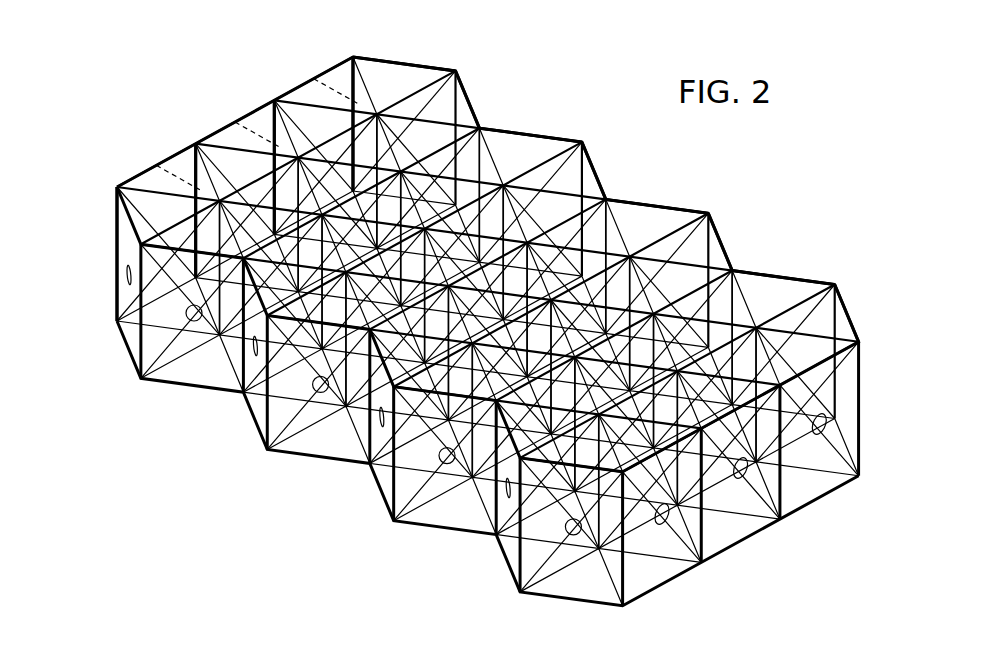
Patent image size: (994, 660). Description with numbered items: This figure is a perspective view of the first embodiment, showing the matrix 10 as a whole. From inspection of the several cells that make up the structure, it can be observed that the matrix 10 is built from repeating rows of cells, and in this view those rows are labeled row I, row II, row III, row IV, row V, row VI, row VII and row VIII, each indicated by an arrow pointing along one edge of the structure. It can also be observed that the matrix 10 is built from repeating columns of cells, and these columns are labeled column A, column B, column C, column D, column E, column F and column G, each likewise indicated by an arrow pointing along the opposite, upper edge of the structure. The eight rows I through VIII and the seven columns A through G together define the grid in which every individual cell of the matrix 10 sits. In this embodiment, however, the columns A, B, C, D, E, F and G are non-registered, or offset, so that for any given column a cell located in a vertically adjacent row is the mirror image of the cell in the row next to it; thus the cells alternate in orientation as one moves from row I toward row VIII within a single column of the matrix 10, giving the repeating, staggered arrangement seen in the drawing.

The matrix 10 is at (479, 316).
The column A is at (344, 52).
The column B is at (305, 74).
The column C is at (265, 95).
The column D is at (226, 117).
The column E is at (187, 139).
The column F is at (147, 160).
The column G is at (108, 182).
The row I is at (411, 55).
The row II is at (474, 91).
The row III is at (538, 126).
The row IV is at (601, 162).
The row V is at (664, 197).
The row VI is at (727, 233).
The row VII is at (790, 269).
The row VIII is at (854, 304).